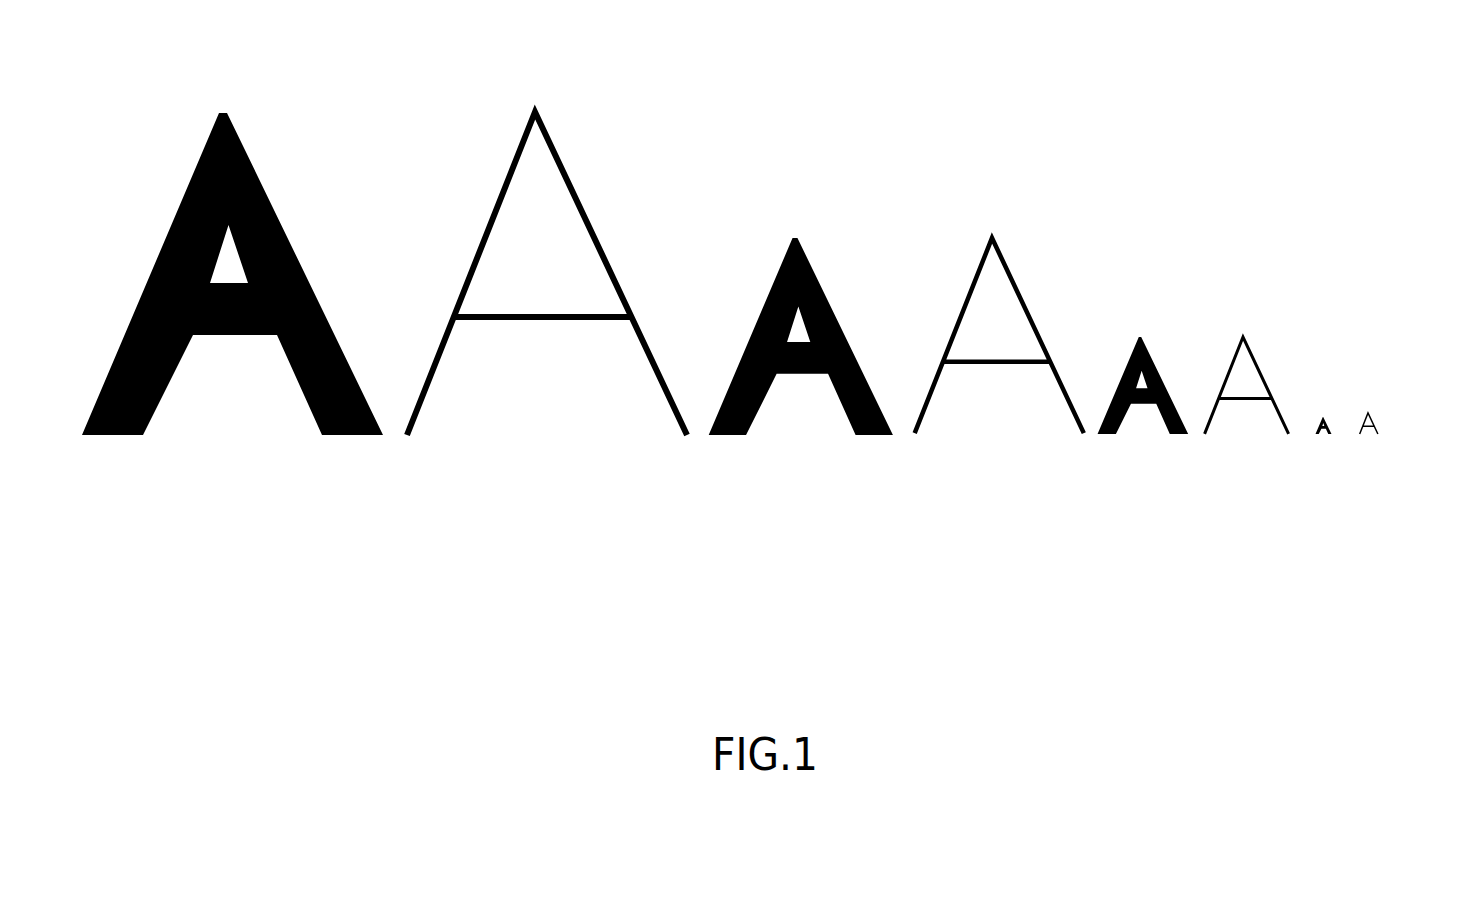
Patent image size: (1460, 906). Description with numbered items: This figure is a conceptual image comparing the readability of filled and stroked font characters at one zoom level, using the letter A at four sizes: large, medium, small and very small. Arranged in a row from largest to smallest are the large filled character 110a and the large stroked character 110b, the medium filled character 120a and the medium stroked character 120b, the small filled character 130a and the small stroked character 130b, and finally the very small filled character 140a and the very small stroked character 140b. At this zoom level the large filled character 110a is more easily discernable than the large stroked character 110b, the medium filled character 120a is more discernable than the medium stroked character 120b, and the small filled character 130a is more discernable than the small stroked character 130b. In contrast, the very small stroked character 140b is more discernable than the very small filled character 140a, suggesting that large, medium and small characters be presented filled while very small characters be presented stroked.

The large filled character 110a is at (223, 111).
The large stroked character 110b is at (535, 110).
The medium filled character 120a is at (795, 236).
The medium stroked character 120b is at (992, 236).
The small filled character 130a is at (1140, 335).
The small stroked character 130b is at (1243, 335).
The very small filled character 140a is at (1323, 415).
The very small stroked character 140b is at (1368, 411).